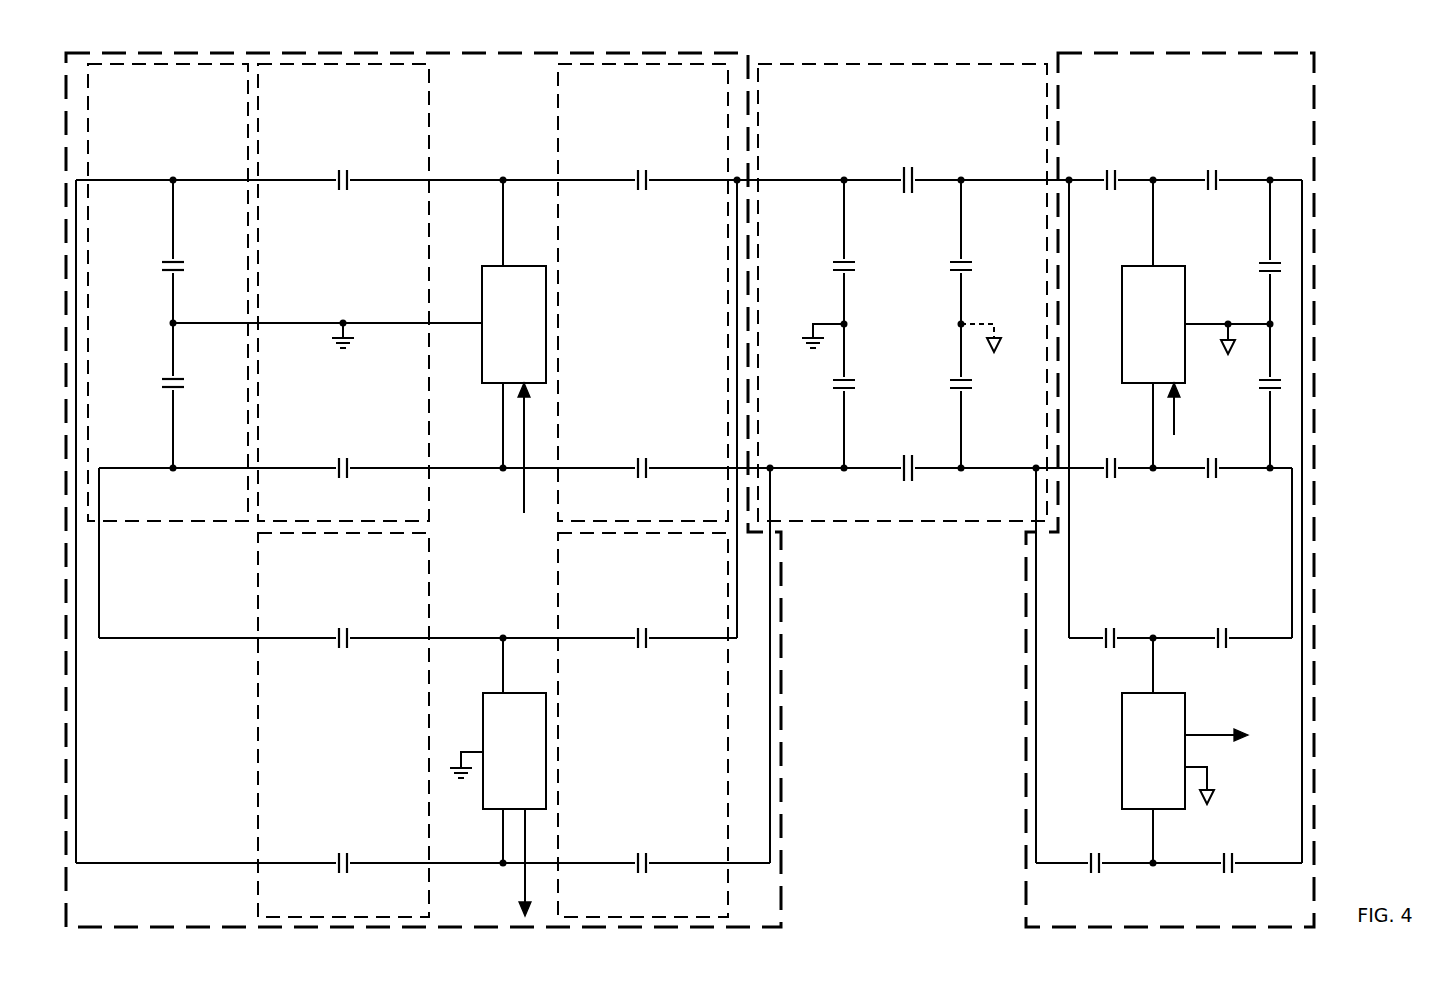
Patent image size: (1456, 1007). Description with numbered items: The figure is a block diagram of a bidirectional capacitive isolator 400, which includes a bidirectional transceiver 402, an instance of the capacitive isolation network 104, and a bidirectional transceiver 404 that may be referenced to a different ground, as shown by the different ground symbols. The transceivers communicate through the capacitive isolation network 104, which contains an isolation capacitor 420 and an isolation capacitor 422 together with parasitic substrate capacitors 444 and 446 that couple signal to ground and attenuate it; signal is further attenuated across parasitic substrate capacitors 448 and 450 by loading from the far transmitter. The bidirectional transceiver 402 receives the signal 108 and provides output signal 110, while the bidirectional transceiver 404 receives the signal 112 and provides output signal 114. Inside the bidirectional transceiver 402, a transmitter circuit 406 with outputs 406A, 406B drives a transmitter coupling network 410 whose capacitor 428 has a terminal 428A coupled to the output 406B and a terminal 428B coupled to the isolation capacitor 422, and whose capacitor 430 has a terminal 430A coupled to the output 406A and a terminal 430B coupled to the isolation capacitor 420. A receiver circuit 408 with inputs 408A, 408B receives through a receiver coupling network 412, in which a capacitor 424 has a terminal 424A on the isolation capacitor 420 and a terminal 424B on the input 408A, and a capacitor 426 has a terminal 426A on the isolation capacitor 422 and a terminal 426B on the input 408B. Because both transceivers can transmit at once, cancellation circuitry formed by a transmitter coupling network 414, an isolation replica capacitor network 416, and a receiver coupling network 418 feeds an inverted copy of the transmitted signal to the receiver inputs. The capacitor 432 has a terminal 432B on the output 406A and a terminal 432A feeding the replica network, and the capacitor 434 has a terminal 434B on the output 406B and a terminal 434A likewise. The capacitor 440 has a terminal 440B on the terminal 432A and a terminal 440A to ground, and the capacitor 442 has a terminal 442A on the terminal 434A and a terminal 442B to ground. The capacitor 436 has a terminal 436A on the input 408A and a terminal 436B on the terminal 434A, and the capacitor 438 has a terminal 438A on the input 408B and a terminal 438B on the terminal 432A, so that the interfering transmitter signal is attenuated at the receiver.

The bidirectional capacitive isolator 400 is at (744, 488).
The bidirectional transceiver 402 is at (464, 490).
The bidirectional transceiver 404 is at (1210, 490).
The capacitive isolation network 104 is at (902, 325).
The transmitter circuit 406 is at (514, 324).
The output 406A is at (469, 244).
The output 406B is at (469, 406).
The receiver circuit 408 is at (514, 751).
The input 408A is at (467, 665).
The input 408B is at (467, 836).
The signal 108 is at (490, 448).
The output signal 110 is at (491, 862).
The signal 112 is at (1209, 413).
The output signal 114 is at (1216, 711).
The transmitter coupling network 410 is at (597, 292).
The receiver coupling network 412 is at (598, 725).
The transmitter coupling network 414 is at (382, 292).
The isolation replica capacitor network 416 is at (168, 325).
The receiver coupling network 418 is at (303, 725).
The isolation capacitor 420 is at (883, 202).
The isolation capacitor 422 is at (883, 449).
The capacitor 424 is at (643, 676).
The terminal 424A is at (683, 654).
The terminal 424B is at (602, 654).
The capacitor 426 is at (643, 825).
The terminal 426A is at (683, 846).
The terminal 426B is at (602, 846).
The capacitor 428 is at (643, 431).
The terminal 428A is at (602, 451).
The terminal 428B is at (683, 451).
The capacitor 430 is at (643, 217).
The terminal 430A is at (602, 196).
The terminal 430B is at (683, 196).
The capacitor 432 is at (344, 217).
The terminal 432A is at (303, 196).
The terminal 432B is at (384, 196).
The capacitor 434 is at (344, 431).
The terminal 434A is at (303, 451).
The terminal 434B is at (384, 451).
The capacitor 436 is at (344, 676).
The terminal 436A is at (384, 654).
The terminal 436B is at (303, 654).
The capacitor 438 is at (344, 825).
The terminal 438A is at (384, 846).
The terminal 438B is at (303, 846).
The capacitor 440 is at (169, 257).
The terminal 440A is at (201, 293).
The terminal 440B is at (201, 239).
The capacitor 442 is at (173, 396).
The terminal 442A is at (201, 410).
The terminal 442B is at (201, 356).
The parasitic substrate capacitor 444 is at (878, 257).
The parasitic substrate capacitor 446 is at (883, 392).
The parasitic substrate capacitor 448 is at (930, 281).
The parasitic substrate capacitor 450 is at (929, 368).